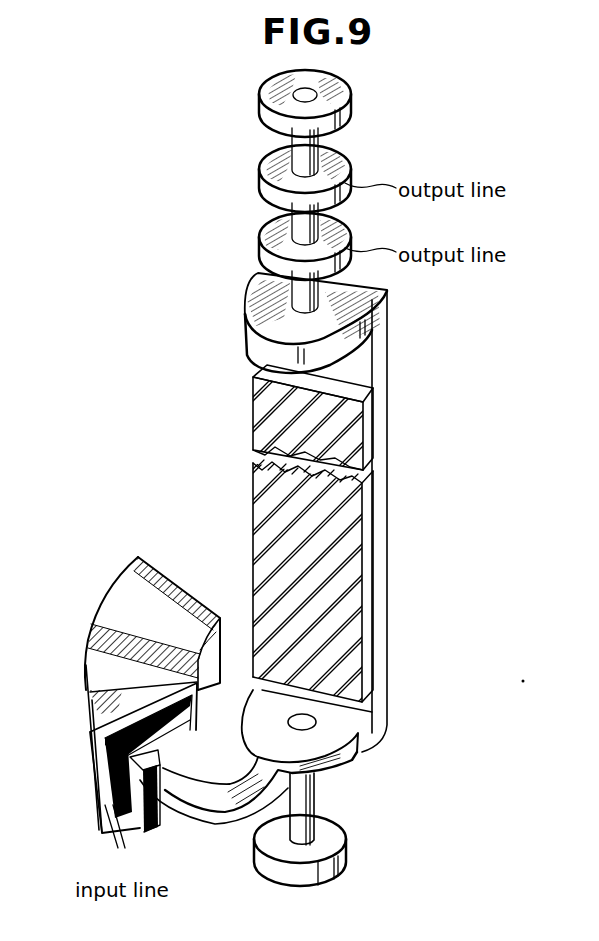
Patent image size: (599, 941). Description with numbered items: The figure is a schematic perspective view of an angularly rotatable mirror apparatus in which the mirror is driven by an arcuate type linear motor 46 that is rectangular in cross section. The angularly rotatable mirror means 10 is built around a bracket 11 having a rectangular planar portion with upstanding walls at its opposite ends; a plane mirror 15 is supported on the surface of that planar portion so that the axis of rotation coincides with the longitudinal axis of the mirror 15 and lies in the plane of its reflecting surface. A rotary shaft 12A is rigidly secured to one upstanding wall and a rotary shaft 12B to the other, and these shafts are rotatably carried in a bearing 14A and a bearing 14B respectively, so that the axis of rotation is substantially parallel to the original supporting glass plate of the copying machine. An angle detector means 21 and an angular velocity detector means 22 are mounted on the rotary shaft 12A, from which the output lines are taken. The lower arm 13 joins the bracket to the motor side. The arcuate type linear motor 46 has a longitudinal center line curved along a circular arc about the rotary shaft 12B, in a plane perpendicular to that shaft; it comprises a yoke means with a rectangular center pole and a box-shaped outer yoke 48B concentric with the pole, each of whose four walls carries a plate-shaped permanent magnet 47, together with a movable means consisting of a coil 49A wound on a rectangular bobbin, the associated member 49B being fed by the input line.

The bearing 14A is at (345, 94).
The rotary shaft 12A is at (330, 153).
The angular velocity detector means 22 is at (265, 182).
The angle detector means 21 is at (262, 247).
The bracket 11 is at (383, 340).
The angularly rotatable mirror means 10 is at (235, 440).
The plane mirror 15 is at (355, 540).
The lower support plate with arm 13 is at (228, 816).
The rotary shaft 12B is at (314, 800).
The bearing 14B is at (346, 858).
The arcuate type linear motor 46 is at (93, 594).
The outer yoke 48B is at (92, 642).
The permanent magnet 47 is at (108, 778).
The coil 49A is at (108, 744).
The second pole piece 49B is at (163, 810).